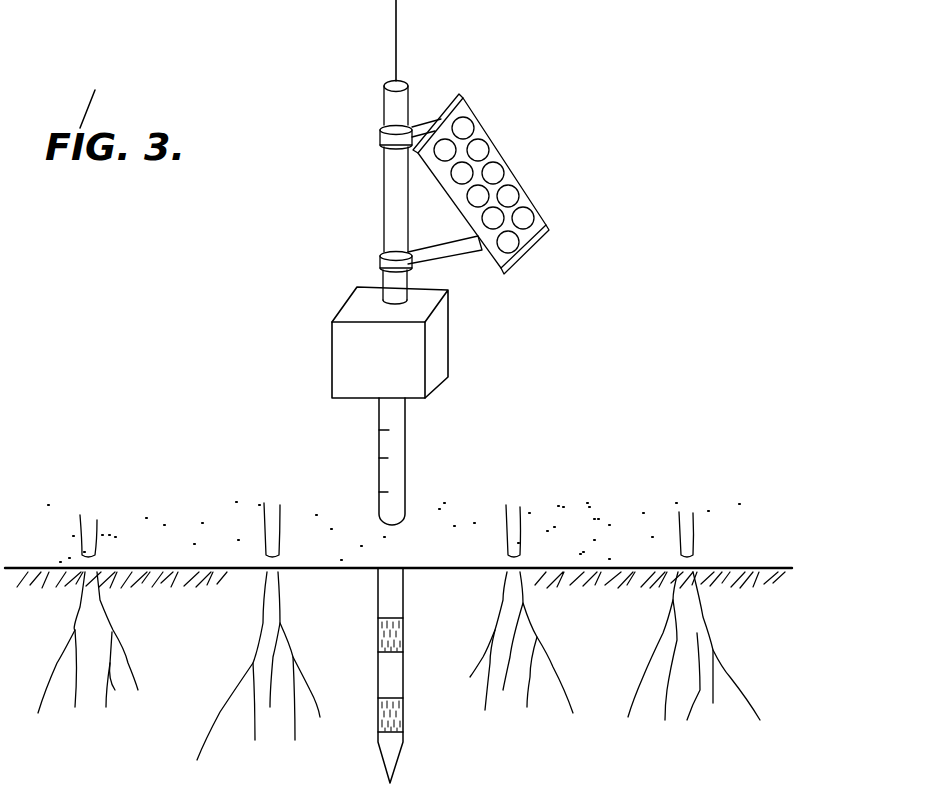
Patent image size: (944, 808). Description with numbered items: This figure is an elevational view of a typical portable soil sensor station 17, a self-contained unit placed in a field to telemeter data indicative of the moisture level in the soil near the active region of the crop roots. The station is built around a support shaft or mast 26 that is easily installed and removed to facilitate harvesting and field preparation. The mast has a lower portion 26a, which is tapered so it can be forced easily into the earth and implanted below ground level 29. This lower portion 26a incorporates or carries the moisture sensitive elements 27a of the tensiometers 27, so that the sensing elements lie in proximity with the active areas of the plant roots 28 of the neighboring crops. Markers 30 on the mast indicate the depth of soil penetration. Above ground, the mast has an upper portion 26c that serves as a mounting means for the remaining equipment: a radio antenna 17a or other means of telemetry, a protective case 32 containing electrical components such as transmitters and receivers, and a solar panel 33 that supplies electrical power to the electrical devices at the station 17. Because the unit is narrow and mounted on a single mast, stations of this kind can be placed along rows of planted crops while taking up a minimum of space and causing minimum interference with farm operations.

The portable soil sensor station 17 is at (558, 331).
The radio antenna 17a is at (393, 40).
The support shaft or mast 26 is at (406, 479).
The lower portion of the mast 26a is at (404, 675).
The upper or above ground portion of the mast 26c is at (383, 208).
The tensiometers 27 is at (376, 628).
The moisture sensitive elements 27a is at (394, 640).
The plant roots 28 is at (220, 712).
The ground level 29 is at (735, 570).
The markers 30 is at (380, 457).
The protective case 32 is at (327, 352).
The solar panel 33 is at (512, 155).